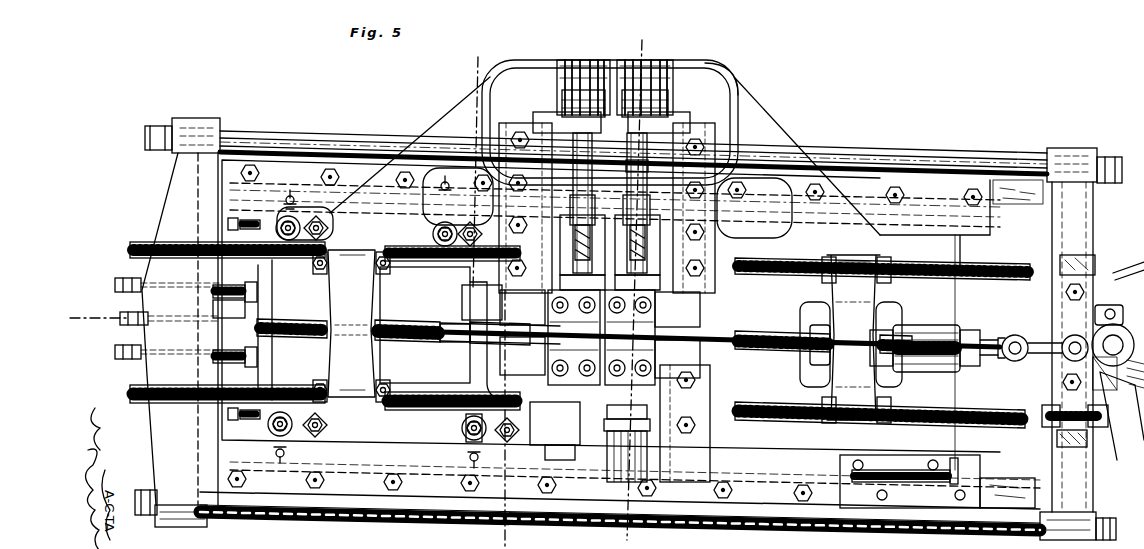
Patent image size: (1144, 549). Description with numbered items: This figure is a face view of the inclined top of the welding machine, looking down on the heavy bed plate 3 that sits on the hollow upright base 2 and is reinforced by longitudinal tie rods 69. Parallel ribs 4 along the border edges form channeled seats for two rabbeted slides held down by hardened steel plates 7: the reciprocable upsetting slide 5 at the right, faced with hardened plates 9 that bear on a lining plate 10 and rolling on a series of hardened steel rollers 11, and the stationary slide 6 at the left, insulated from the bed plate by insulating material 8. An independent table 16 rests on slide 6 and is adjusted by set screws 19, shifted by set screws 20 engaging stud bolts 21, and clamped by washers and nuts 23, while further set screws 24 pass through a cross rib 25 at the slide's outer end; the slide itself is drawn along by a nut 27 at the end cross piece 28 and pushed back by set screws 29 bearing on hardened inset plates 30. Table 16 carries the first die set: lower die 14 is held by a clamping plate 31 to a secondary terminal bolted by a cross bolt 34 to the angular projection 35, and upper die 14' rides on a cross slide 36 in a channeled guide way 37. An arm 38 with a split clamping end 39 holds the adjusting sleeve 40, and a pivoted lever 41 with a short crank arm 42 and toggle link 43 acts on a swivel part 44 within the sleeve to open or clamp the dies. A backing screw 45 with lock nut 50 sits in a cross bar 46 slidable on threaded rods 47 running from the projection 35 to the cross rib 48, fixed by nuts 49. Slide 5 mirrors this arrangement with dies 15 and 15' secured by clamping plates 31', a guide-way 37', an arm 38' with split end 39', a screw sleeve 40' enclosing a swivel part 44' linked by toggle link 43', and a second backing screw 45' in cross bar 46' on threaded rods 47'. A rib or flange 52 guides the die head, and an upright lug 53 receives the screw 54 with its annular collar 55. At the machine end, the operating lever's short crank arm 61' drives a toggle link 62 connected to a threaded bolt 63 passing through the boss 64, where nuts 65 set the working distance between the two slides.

The hollow upright base 2 is at (656, 42).
The bed plate 3 is at (1093, 236).
The parallel ribs 4 is at (1012, 200).
The reciprocable upsetting slide 5 is at (950, 390).
The stationary slide 6 is at (79, 306).
The hardened steel plates 7 is at (494, 61).
The electrical insulating material 8 is at (280, 548).
The hardened steel plates 9 is at (954, 466).
The hardened and ground plate 10 is at (918, 498).
The hardened steel rollers 11 is at (898, 468).
The lower welding die 14 is at (522, 356).
The upper welding die 14' is at (522, 307).
The welding die 15 is at (677, 359).
The welding die 15' is at (677, 309).
The table 16 is at (425, 325).
The set screw 19 is at (328, 228).
The set screws 20 is at (296, 200).
The stud bolts 21 is at (280, 218).
The washers and nuts 23 is at (462, 437).
The set screws 24 is at (228, 226).
The cross rib 25 is at (272, 275).
The nut 27 is at (120, 328).
The end cross piece 28 is at (165, 207).
The set screws 29 is at (113, 284).
The hardened inset plates 30 is at (247, 285).
The clamping plate 31 is at (574, 346).
The clamping plates 31' is at (642, 345).
The cross bolt 34 is at (556, 460).
The angular projection 35 is at (555, 423).
The cross slide 36 is at (572, 280).
The channeled guide way 37 is at (550, 200).
The guide-way 37' is at (676, 202).
The arm 38 is at (610, 112).
The arm 38' is at (721, 77).
The split clamping end 39 is at (583, 76).
The split end 39' is at (657, 78).
The adjusting sleeve 40 is at (566, 103).
The screw sleeve 40' is at (666, 103).
The pivoted lever 41 is at (560, 252).
The short crank arm 42 is at (592, 212).
The toggle link 43 is at (610, 204).
The toggle link 43' is at (664, 165).
The swivel part 44 is at (594, 203).
The swivel part 44' is at (673, 189).
The backing screw 45 is at (628, 325).
The backing screw 45' is at (822, 332).
The cross bar 46 is at (351, 323).
The cross bar 46' is at (851, 339).
The screw-threaded rods 47 is at (580, 321).
The screw-threaded rods 47' is at (577, 339).
The cross rib 48 is at (491, 341).
The nuts 49 is at (365, 266).
The lock nut 50 is at (445, 342).
The rib or flange 52 is at (700, 438).
The upright lug 53 is at (612, 480).
The screw 54 is at (607, 411).
The annular collar 55 is at (650, 422).
The short crank arm 61' is at (1103, 361).
The toggle link 62 is at (1040, 340).
The screw-threaded bolt 63 is at (1008, 338).
The boss 64 is at (930, 324).
The nuts 65 is at (872, 318).
The tie rods 69 is at (1000, 166).